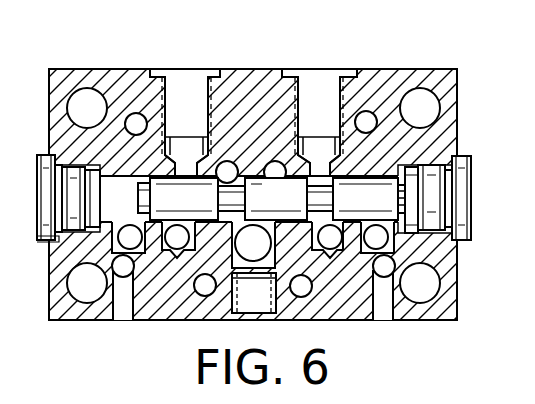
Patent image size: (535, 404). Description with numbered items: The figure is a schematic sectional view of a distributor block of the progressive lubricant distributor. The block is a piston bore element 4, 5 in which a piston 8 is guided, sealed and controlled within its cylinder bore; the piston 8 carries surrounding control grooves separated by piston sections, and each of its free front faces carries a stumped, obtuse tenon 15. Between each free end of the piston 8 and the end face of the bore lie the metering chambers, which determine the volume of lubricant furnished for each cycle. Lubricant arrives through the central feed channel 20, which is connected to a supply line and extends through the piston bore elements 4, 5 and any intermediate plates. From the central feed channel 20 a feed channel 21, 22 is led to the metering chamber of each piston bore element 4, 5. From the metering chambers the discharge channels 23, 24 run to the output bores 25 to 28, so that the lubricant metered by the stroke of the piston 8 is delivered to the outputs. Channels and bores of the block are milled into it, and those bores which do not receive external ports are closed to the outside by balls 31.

The piston bore element 4 is at (253, 194).
The piston bore element 5 is at (457, 302).
The piston 8 is at (401, 213).
The tenon 15 is at (142, 196).
The central feed channel 20 is at (250, 238).
The feed channel 21 is at (137, 114).
The feed channel 22 is at (369, 113).
The discharge channel 23 is at (168, 240).
The discharge channel 24 is at (312, 289).
The output bore 25 is at (182, 88).
The output bore 26 is at (185, 122).
The output bore 27 is at (319, 122).
The output bore 28 is at (318, 96).
The ball 31 is at (123, 268).